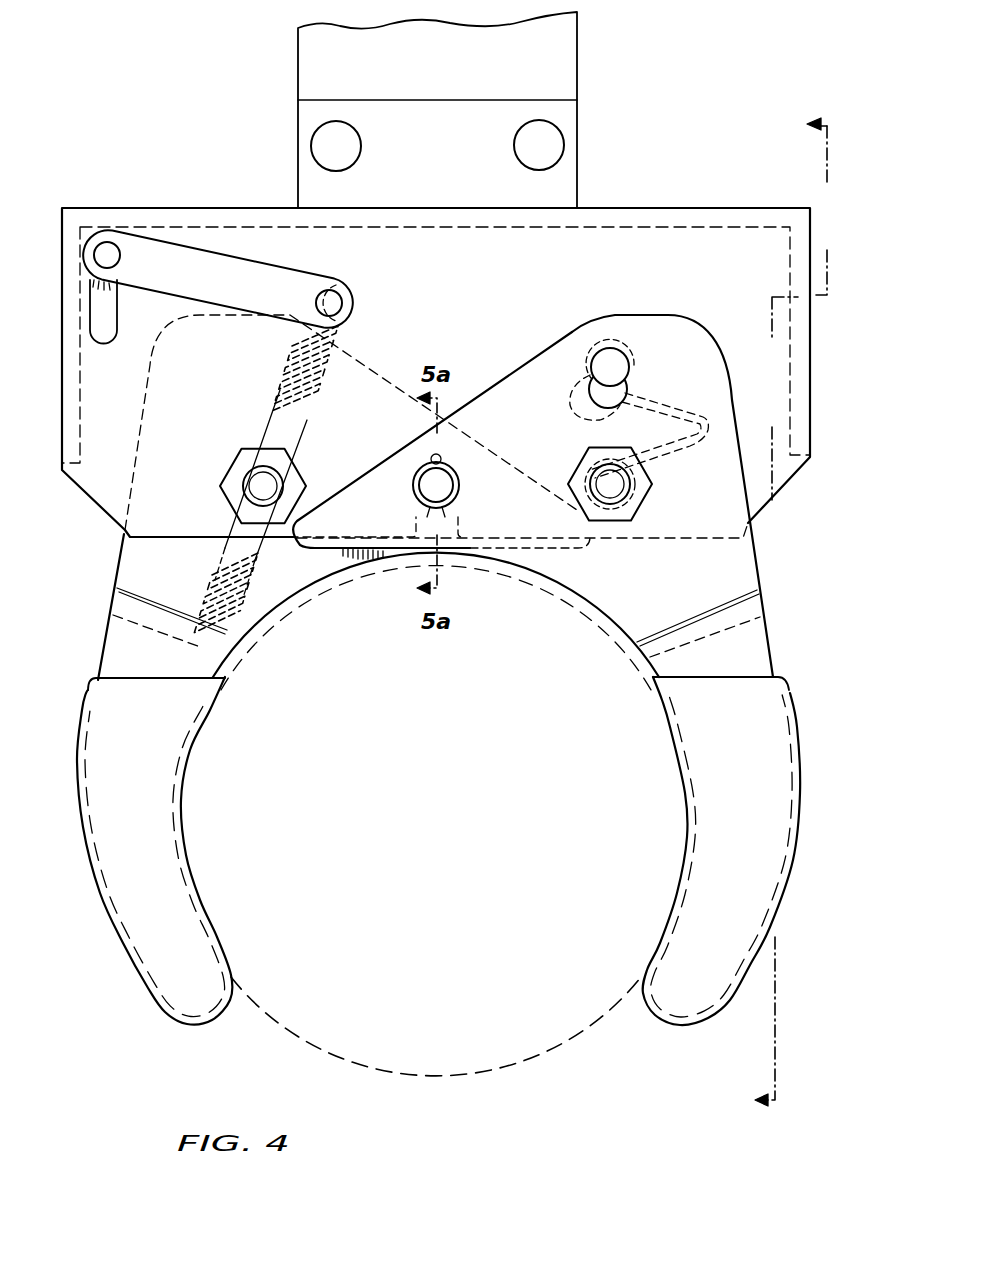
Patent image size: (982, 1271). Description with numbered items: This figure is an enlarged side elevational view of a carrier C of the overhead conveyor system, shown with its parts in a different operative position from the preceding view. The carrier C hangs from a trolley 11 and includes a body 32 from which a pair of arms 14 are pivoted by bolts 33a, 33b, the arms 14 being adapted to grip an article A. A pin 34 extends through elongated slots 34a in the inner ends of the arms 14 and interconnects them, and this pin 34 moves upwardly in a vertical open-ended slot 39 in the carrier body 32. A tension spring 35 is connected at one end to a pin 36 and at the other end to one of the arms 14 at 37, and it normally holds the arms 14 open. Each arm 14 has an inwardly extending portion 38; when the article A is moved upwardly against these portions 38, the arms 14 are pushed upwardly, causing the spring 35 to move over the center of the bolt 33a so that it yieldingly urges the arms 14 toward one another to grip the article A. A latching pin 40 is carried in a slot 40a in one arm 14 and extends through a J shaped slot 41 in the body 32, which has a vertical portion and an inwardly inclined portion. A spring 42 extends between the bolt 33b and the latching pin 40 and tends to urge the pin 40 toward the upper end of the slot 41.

The trolley 11 is at (297, 75).
The carrier body 32 is at (758, 207).
The carrier C is at (647, 203).
The pin 36 is at (345, 300).
The tension spring 35 is at (337, 350).
The spring connection point on arm 37 is at (230, 650).
The bolt 33a is at (252, 489).
The bolt 33b is at (630, 486).
The pin 34 is at (430, 490).
The elongated slot 34a is at (422, 470).
The inwardly extending portion 38 is at (328, 548).
The vertical open-ended slot 39 is at (460, 511).
The latching pin 40 is at (629, 368).
The slot 40a is at (625, 388).
The J shaped slot 41 is at (570, 393).
The spring 42 is at (713, 405).
The arm 14 is at (126, 925).
The article A is at (546, 1054).